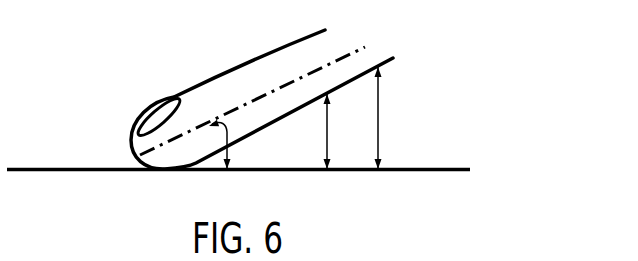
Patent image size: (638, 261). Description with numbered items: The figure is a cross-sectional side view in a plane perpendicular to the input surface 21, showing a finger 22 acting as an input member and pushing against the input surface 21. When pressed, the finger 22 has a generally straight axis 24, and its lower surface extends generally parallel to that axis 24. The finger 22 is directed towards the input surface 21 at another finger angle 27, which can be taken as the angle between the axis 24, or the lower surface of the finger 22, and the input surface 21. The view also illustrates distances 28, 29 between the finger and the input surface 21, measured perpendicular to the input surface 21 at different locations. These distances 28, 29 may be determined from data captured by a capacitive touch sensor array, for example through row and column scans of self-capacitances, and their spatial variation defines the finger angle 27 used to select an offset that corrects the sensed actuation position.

The input surface 21 is at (267, 139).
The finger 22 is at (261, 99).
The axis 24 is at (252, 84).
The finger angle 27 is at (261, 144).
The distance 28 is at (304, 149).
The distance 29 is at (400, 135).